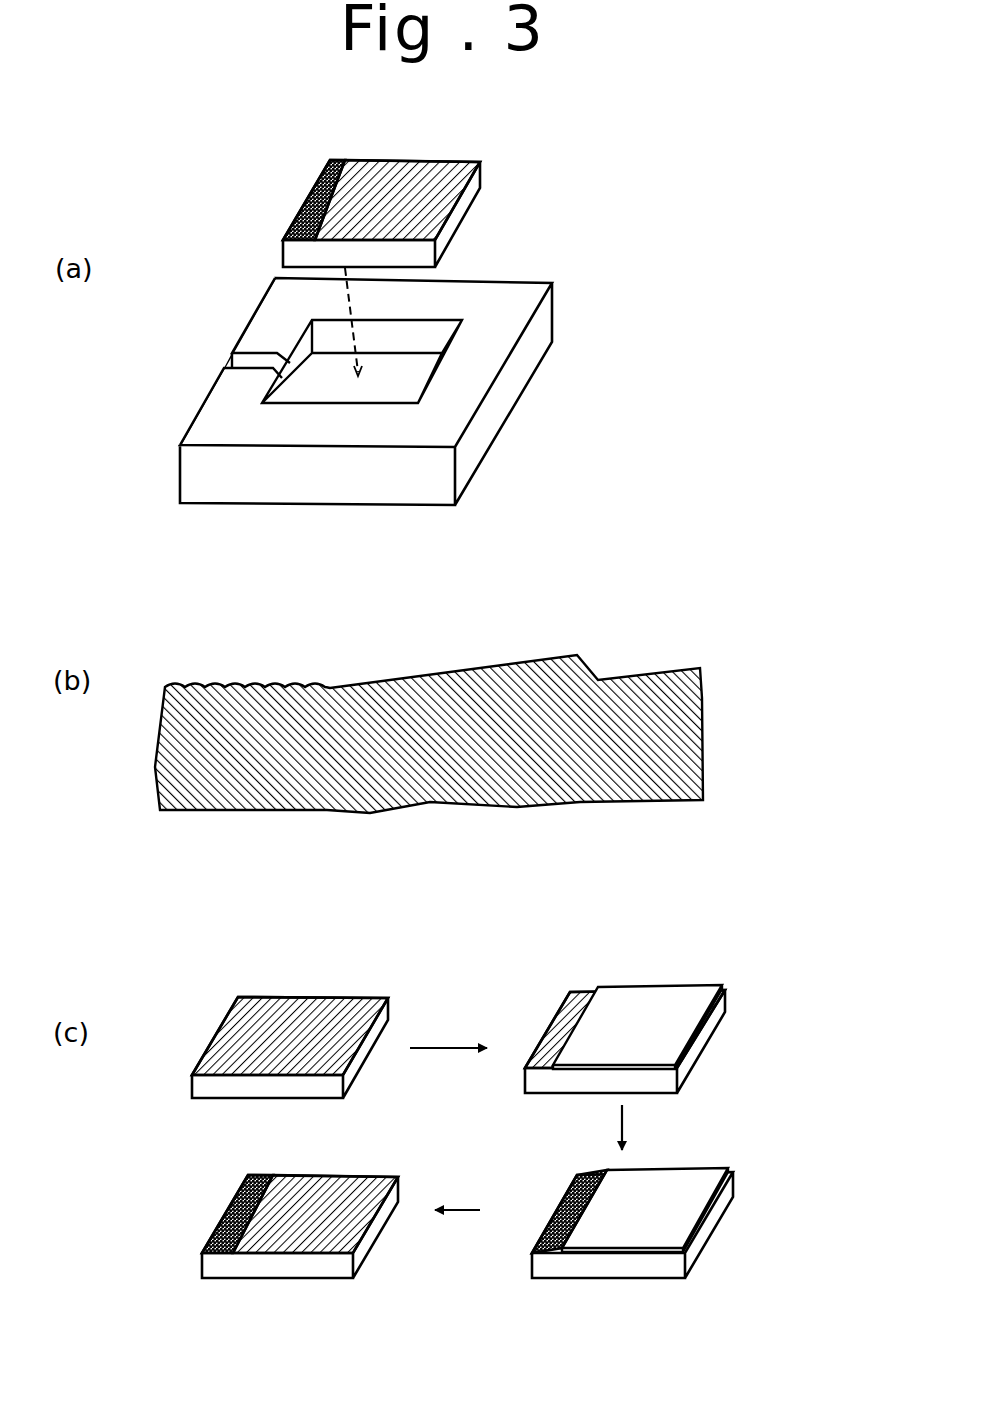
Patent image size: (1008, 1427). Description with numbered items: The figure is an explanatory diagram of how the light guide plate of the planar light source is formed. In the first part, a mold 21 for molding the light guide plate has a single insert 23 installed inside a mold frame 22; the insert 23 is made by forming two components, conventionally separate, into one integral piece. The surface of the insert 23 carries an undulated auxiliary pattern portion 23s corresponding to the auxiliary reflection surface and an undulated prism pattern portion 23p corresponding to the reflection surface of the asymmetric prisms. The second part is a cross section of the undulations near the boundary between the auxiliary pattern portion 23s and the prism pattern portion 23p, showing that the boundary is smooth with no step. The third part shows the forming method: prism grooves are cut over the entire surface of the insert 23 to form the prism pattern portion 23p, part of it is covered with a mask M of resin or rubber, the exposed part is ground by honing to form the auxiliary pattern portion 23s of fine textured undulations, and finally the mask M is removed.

The mold 21 is at (262, 262).
The mold frame 22 is at (497, 298).
The insert 23 is at (462, 212).
The prism pattern portion 23p is at (440, 175).
The auxiliary pattern portion 23s is at (330, 162).
The mask M is at (657, 1005).